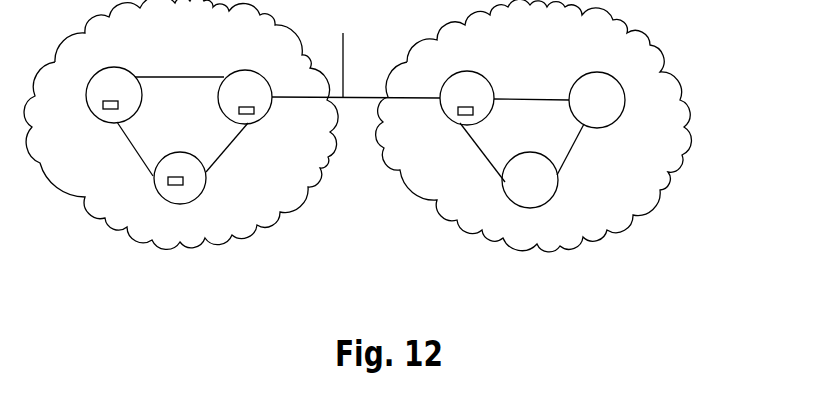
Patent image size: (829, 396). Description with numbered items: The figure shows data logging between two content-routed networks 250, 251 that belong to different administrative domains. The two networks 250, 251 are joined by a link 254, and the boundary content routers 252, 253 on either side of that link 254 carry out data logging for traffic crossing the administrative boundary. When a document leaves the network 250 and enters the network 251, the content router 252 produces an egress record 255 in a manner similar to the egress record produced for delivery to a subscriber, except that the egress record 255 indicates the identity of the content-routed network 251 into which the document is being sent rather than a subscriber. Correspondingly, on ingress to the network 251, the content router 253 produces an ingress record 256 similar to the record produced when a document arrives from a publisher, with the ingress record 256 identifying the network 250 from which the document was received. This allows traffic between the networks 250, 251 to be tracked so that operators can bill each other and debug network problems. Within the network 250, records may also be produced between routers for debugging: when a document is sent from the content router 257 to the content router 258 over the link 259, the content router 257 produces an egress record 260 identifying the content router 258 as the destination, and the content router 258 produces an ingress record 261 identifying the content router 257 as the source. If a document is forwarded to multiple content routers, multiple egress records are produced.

The network 250 is at (188, 247).
The network 251 is at (543, 250).
The content router 252 is at (240, 70).
The content router 253 is at (466, 71).
The link 254 is at (343, 33).
The egress record 255 is at (248, 114).
The ingress record 256 is at (473, 115).
The content router 257 is at (114, 67).
The content router 258 is at (168, 154).
The link 259 is at (134, 151).
The egress record 260 is at (103, 105).
The ingress record 261 is at (168, 182).